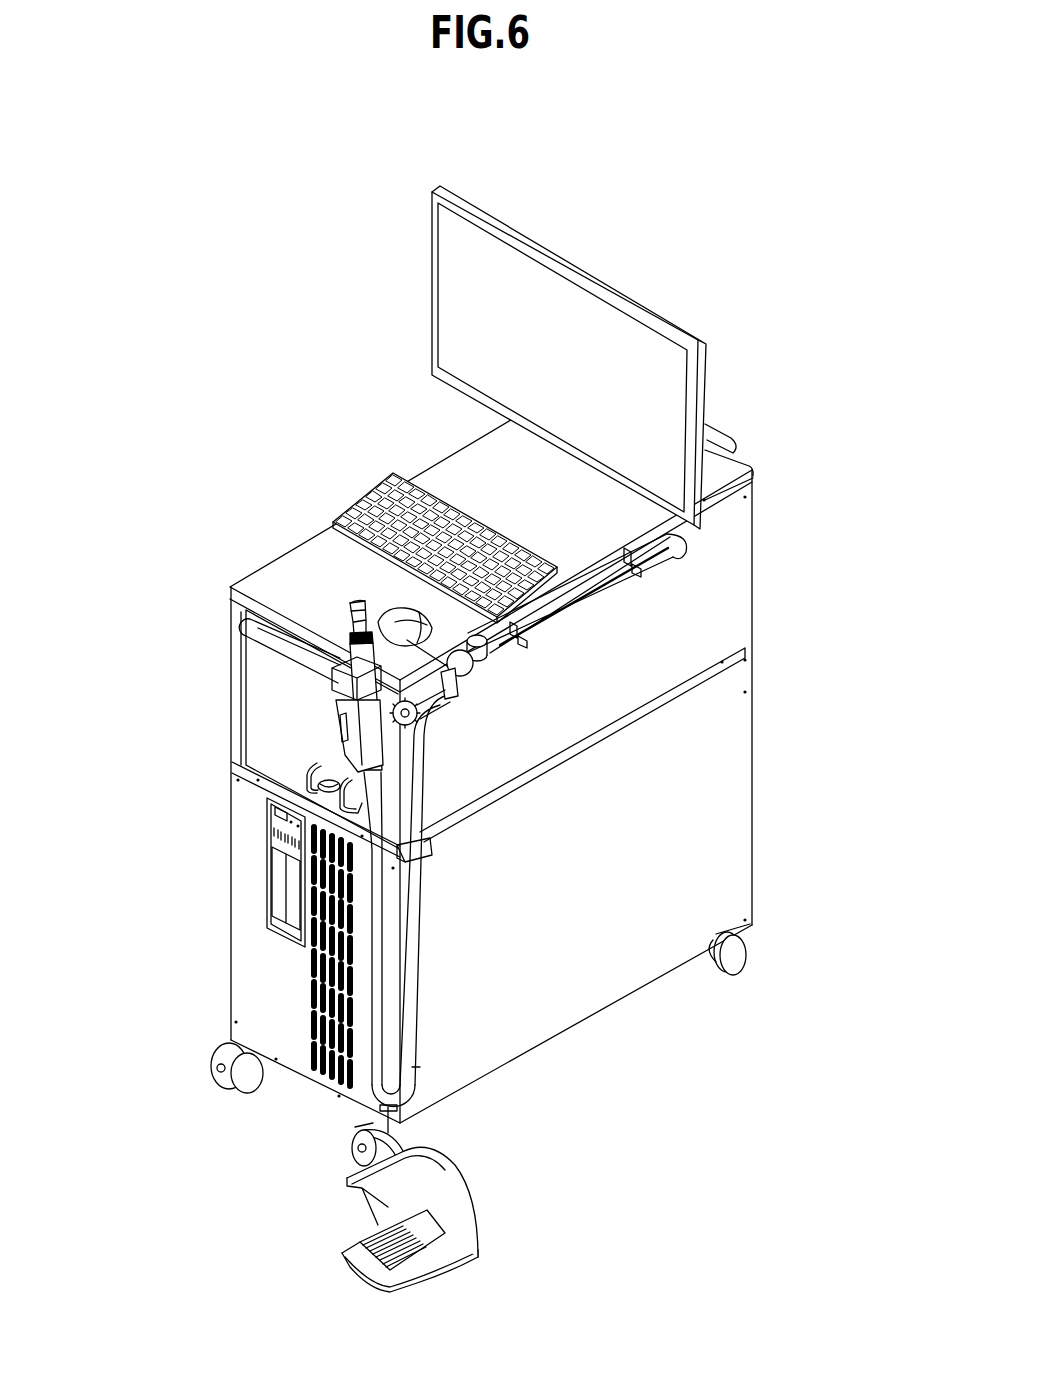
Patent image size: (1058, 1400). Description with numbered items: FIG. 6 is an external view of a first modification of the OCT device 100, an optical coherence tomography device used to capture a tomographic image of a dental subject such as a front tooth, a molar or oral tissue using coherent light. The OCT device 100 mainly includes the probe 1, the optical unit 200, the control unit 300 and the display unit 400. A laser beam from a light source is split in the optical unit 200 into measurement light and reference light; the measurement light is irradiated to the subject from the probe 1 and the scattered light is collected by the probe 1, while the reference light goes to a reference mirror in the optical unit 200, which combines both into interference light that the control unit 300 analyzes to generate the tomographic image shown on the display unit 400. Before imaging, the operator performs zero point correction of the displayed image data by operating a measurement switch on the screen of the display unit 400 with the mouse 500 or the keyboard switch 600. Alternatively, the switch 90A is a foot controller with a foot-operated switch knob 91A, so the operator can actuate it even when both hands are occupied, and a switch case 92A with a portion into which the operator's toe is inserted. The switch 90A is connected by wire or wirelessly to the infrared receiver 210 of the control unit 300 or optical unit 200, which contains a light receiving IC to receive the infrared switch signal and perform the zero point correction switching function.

The OCT device 100 is at (280, 288).
The probe 1 is at (347, 630).
The optical unit 200 is at (270, 687).
The infrared receiver 210 is at (423, 858).
The control unit 300 is at (272, 983).
The display unit 400 is at (592, 275).
The mouse 500 is at (473, 681).
The keyboard switch 600 is at (540, 575).
The switch 90A is at (453, 1220).
The switch knob 91A is at (366, 1258).
The switch case 92A is at (423, 1170).